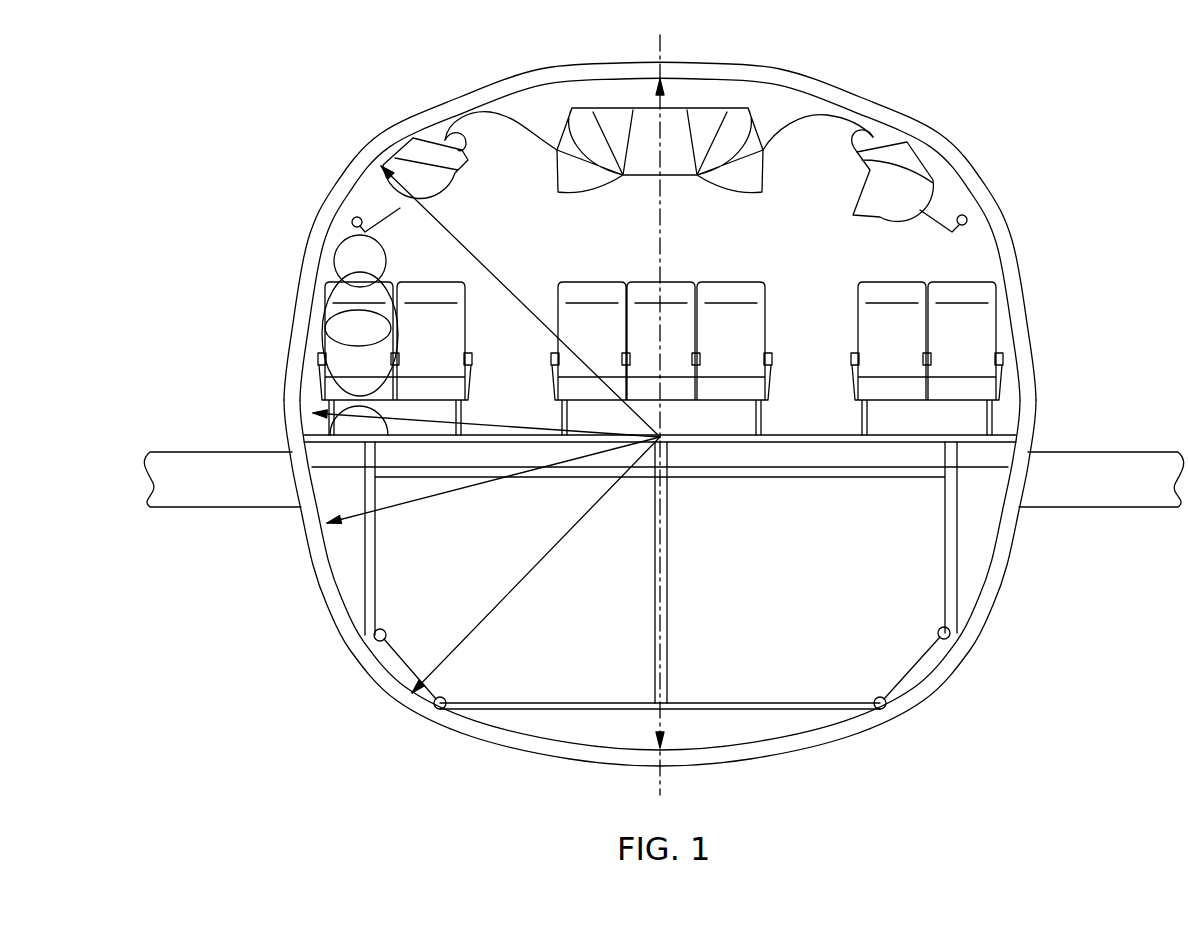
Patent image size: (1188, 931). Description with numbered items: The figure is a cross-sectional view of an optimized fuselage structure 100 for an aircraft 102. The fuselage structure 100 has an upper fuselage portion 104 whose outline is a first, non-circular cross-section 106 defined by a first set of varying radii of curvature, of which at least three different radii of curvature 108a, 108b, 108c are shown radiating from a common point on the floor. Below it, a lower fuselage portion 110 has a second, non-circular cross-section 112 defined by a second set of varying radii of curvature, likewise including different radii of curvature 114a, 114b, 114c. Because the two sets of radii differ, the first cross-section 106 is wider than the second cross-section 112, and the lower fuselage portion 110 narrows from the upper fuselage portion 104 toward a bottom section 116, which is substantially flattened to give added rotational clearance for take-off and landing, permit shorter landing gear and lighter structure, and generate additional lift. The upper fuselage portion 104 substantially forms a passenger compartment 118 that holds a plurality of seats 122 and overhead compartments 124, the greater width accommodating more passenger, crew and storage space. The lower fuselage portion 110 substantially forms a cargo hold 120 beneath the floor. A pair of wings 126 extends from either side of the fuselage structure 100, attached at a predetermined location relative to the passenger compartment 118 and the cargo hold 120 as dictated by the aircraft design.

The fuselage structure 100 is at (663, 423).
The aircraft 102 is at (663, 423).
The upper fuselage portion 104 is at (890, 101).
The first non-circular cross-section 106 is at (454, 172).
The first radius of curvature 108a is at (498, 423).
The second radius of curvature 108b is at (487, 270).
The third radius of curvature 108c is at (663, 249).
The lower fuselage portion 110 is at (972, 668).
The second non-circular cross-section 112 is at (662, 638).
The first radius of curvature of second set 114a is at (422, 503).
The second radius of curvature of second set 114b is at (493, 610).
The third radius of curvature of second set 114c is at (655, 590).
The bottom section 116 is at (734, 766).
The passenger compartment 118 is at (822, 259).
The cargo hold 120 is at (778, 594).
The seats 122 is at (857, 332).
The overhead compartments 124 is at (853, 165).
The wings 126 is at (1095, 452).